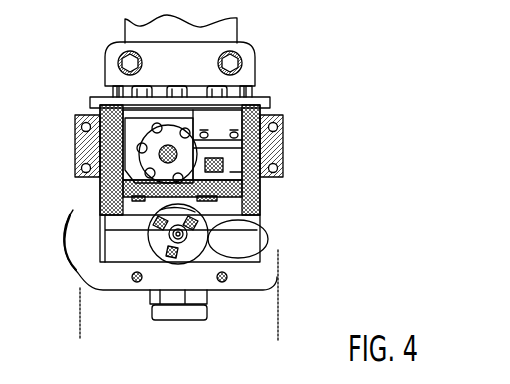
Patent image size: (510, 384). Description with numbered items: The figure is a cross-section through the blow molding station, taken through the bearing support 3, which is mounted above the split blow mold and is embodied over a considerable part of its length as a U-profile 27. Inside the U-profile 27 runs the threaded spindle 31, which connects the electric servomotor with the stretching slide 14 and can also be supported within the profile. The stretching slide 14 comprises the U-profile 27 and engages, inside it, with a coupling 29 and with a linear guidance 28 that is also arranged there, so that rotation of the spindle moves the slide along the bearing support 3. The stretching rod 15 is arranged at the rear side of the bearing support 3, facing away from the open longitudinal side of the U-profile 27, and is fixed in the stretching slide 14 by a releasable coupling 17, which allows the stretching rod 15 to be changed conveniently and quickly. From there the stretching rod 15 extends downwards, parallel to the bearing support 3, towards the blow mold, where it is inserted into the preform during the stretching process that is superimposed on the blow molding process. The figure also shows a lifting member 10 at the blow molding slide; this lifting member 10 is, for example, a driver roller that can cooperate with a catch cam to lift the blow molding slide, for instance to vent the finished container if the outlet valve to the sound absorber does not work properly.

The bearing support 3 is at (263, 140).
The lifting member 10 is at (207, 313).
The stretching slide 14 is at (278, 209).
The stretching rod 15 is at (252, 261).
The releasable coupling 17 is at (208, 222).
The U-profile 27 is at (270, 144).
The linear guidance 28 is at (267, 178).
The coupling 29 is at (215, 120).
The threaded spindle 31 is at (162, 122).